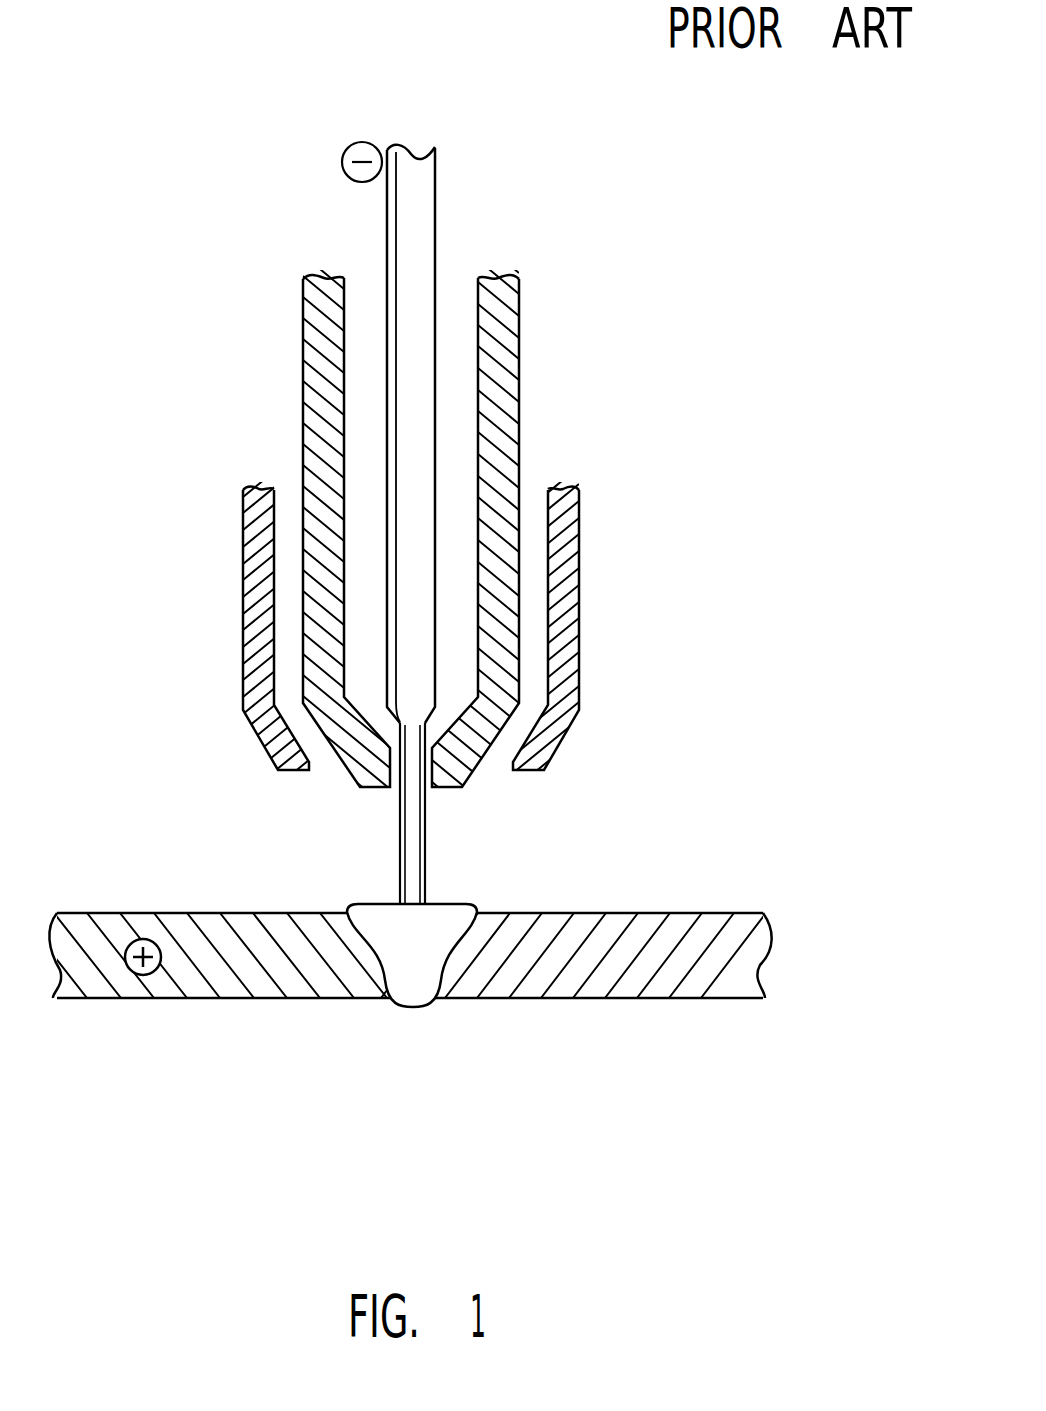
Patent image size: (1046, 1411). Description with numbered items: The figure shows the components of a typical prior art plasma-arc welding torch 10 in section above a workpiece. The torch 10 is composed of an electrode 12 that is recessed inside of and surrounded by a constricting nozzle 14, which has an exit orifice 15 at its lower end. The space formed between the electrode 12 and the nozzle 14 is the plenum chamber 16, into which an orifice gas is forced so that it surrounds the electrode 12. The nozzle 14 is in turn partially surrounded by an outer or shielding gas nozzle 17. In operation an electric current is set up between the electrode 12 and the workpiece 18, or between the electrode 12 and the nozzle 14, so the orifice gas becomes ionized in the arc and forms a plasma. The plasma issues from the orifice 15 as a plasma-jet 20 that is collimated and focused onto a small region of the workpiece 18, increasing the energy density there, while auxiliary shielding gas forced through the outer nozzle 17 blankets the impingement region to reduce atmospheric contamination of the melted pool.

The plasma-arc welding torch 10 is at (456, 457).
The electrode 12 is at (385, 260).
The constricting nozzle 14 is at (518, 349).
The exit orifice 15 is at (388, 793).
The plenum chamber 16 is at (452, 320).
The shielding gas nozzle 17 is at (580, 589).
The workpiece 18 is at (212, 913).
The plasma-jet 20 is at (427, 847).